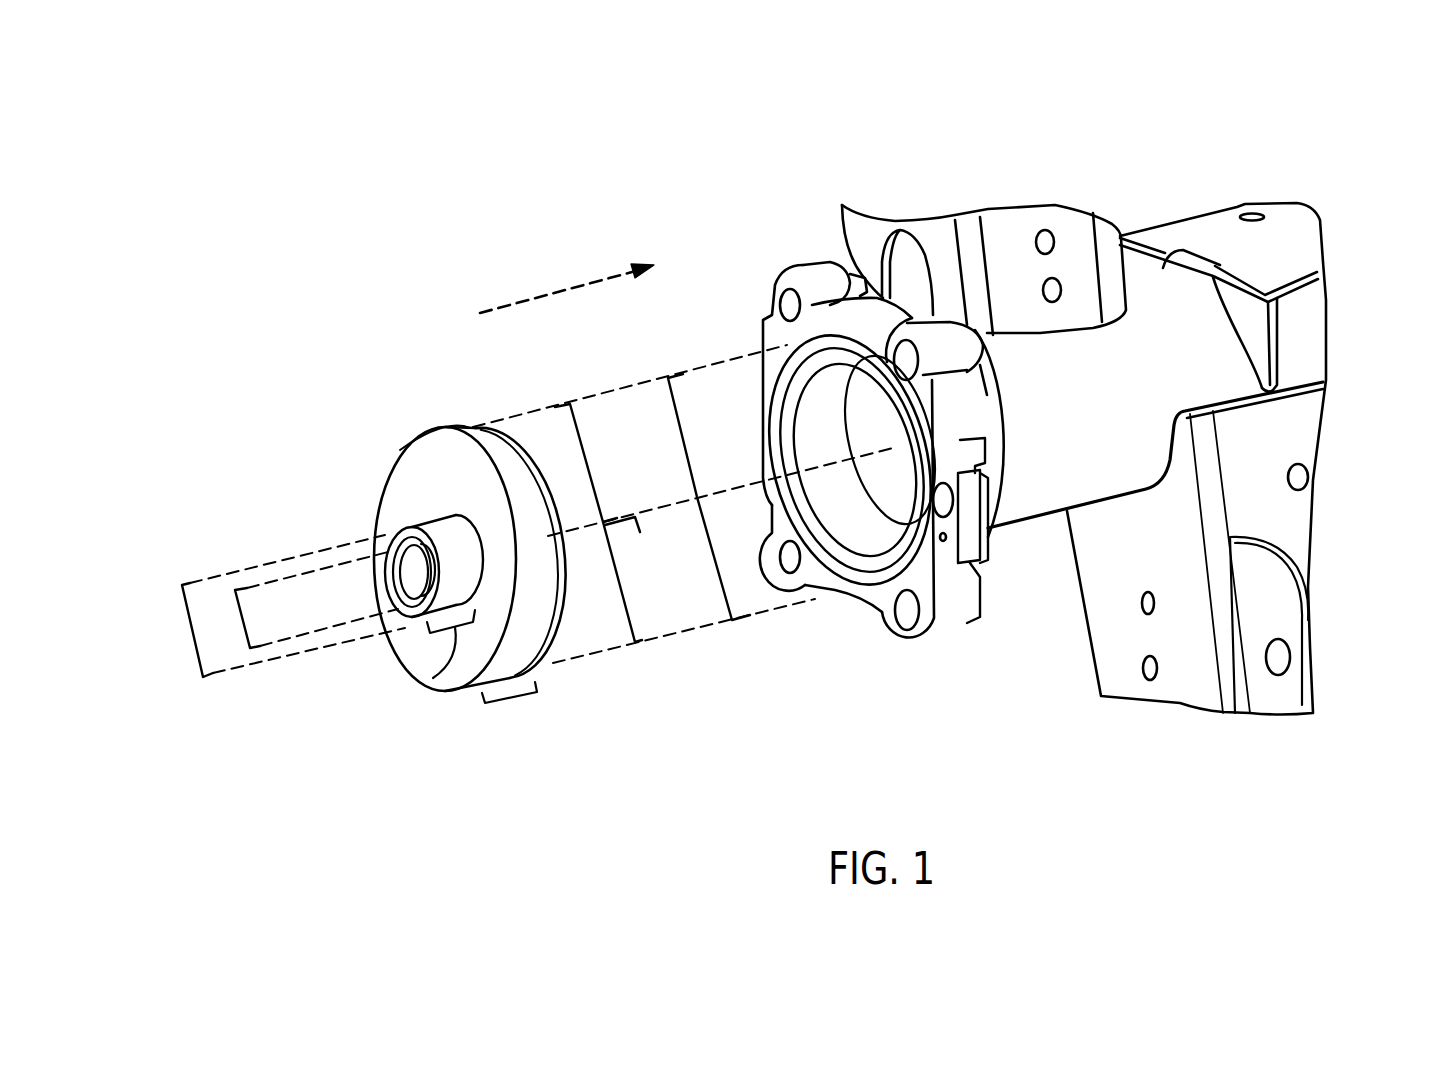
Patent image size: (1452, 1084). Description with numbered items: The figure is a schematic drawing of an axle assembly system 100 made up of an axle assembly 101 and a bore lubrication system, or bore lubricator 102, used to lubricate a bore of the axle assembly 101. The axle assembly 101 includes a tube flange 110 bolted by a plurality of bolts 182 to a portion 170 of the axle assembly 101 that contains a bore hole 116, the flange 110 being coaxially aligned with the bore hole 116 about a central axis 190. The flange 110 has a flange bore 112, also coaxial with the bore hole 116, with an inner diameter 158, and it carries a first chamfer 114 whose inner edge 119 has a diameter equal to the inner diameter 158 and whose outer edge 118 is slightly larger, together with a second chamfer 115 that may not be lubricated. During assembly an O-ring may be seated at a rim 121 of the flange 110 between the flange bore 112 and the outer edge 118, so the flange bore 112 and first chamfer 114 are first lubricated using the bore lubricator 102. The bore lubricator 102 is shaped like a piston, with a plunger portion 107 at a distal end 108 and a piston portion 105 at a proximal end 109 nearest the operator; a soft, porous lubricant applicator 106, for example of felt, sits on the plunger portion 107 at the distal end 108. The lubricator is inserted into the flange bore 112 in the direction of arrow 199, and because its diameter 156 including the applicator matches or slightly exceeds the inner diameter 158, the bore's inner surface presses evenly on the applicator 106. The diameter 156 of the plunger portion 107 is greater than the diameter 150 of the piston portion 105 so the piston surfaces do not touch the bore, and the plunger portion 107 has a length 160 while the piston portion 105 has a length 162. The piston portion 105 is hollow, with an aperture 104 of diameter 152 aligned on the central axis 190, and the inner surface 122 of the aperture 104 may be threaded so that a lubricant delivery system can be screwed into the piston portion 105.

The axle assembly system 100 is at (1374, 138).
The axle assembly 101 is at (887, 176).
The bore lubrication system 102 is at (400, 462).
The aperture 104 is at (358, 593).
The piston portion 105 is at (412, 527).
The lubricant applicator 106 is at (463, 427).
The plunger portion 107 is at (490, 477).
The distal end 108 is at (500, 389).
The proximal end 109 is at (324, 461).
The tube flange 110 is at (783, 272).
The flange bore 112 is at (787, 487).
The first chamfer 114 is at (785, 535).
The second chamfer 115 is at (900, 538).
The bore hole 116 is at (870, 433).
The outer edge 118 is at (815, 578).
The inner edge 119 is at (823, 590).
The rim 121 is at (815, 480).
The inner surface 122 is at (413, 580).
The diameter of piston portion 150 is at (192, 632).
The diameter of aperture 152 is at (237, 620).
The diameter of bore lubricator 156 is at (684, 533).
The inner diameter of flange bore 158 is at (672, 505).
The length of plunger portion 160 is at (510, 698).
The length of piston portion 162 is at (435, 671).
The portion of axle assembly 170 is at (1021, 585).
The bolts 182 is at (987, 365).
The central axis 190 is at (700, 497).
The arrow 199 is at (534, 292).